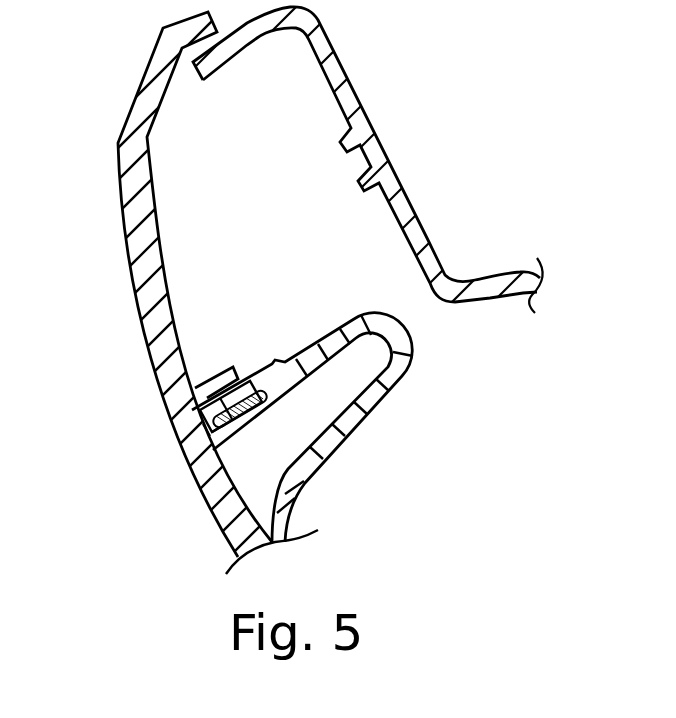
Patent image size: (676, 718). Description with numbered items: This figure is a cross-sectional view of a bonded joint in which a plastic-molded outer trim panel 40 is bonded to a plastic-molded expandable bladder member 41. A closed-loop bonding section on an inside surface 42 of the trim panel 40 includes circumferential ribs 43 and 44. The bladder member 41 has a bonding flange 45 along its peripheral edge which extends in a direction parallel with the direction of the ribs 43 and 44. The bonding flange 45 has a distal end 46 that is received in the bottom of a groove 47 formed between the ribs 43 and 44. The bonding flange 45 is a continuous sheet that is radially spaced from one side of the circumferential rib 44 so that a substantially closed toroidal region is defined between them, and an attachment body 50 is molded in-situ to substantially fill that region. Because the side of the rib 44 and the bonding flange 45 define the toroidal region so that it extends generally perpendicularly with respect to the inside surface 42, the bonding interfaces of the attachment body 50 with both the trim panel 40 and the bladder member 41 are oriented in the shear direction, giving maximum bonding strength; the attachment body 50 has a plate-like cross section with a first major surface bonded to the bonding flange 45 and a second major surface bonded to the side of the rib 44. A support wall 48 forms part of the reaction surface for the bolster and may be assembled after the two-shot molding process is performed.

The outer trim panel 40 is at (117, 147).
The expandable bladder member 41 is at (372, 322).
The inside surface 42 is at (161, 241).
The circumferential rib 43 is at (207, 384).
The circumferential rib 44 is at (237, 438).
The bonding flange 45 is at (248, 380).
The distal end 46 is at (213, 424).
The groove 47 is at (206, 407).
The support wall 48 is at (356, 85).
The attachment body 50 is at (205, 434).